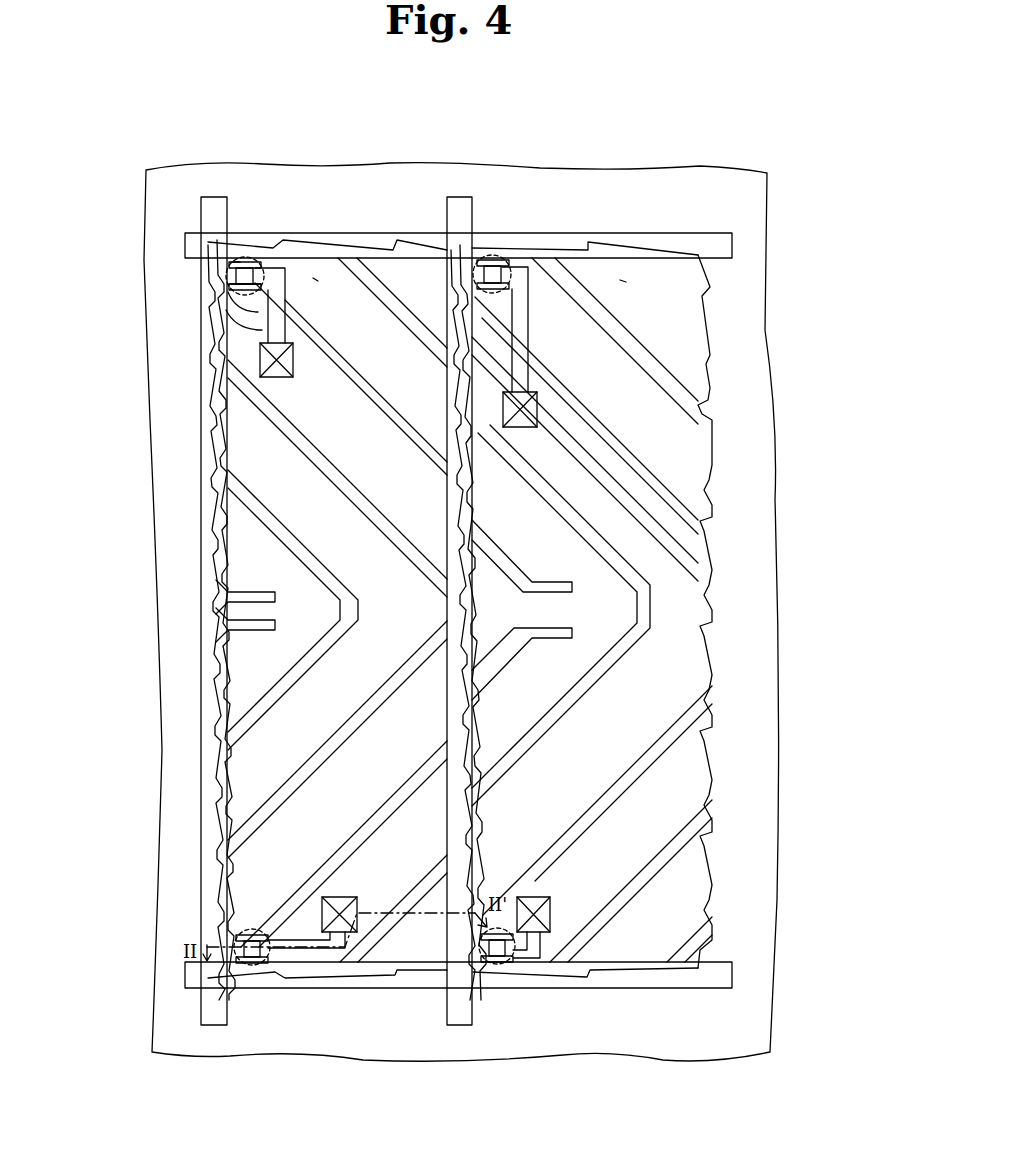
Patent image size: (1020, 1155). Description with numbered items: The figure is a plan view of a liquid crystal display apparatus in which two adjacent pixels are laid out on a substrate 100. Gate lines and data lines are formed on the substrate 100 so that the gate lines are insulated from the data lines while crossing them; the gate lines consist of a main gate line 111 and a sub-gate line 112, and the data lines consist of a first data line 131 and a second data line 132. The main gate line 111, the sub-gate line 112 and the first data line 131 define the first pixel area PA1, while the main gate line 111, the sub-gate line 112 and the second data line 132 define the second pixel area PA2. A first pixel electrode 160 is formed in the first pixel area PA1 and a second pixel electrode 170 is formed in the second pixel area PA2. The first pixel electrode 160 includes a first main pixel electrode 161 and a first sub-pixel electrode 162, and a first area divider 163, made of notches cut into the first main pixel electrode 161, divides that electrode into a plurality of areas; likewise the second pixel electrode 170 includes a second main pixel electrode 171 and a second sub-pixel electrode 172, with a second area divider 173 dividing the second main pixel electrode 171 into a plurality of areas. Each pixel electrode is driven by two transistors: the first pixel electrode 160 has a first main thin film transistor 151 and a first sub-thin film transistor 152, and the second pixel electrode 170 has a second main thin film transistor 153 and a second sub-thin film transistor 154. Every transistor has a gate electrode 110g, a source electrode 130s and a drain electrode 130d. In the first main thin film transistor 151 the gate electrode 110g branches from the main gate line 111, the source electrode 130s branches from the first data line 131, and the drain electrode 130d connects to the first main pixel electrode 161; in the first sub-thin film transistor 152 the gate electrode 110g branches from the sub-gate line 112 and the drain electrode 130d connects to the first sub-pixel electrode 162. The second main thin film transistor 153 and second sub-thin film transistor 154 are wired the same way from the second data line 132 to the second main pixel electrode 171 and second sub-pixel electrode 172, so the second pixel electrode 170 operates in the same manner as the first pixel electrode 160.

The substrate 100 is at (738, 1053).
The main gate line 111 is at (723, 976).
The sub-gate line 112 is at (723, 246).
The first data line 131 is at (215, 1017).
The second data line 132 is at (460, 1017).
The first main thin film transistor 151 is at (243, 965).
The first sub-thin film transistor 152 is at (245, 258).
The second main thin film transistor 153 is at (493, 968).
The second sub-thin film transistor 154 is at (490, 255).
The source electrode 130s is at (233, 278).
The gate electrode 110g is at (228, 310).
The drain electrode 130d is at (248, 332).
The first pixel electrode 160 is at (227, 539).
The first main pixel electrode 161 is at (262, 467).
The first sub-pixel electrode 162 is at (317, 413).
The first area divider 163 is at (267, 698).
The second pixel electrode 170 is at (687, 542).
The second main pixel electrode 171 is at (692, 455).
The second sub-pixel electrode 172 is at (687, 559).
The second area divider 173 is at (697, 405).
The first pixel area PA1 is at (313, 278).
The second pixel area PA2 is at (620, 280).